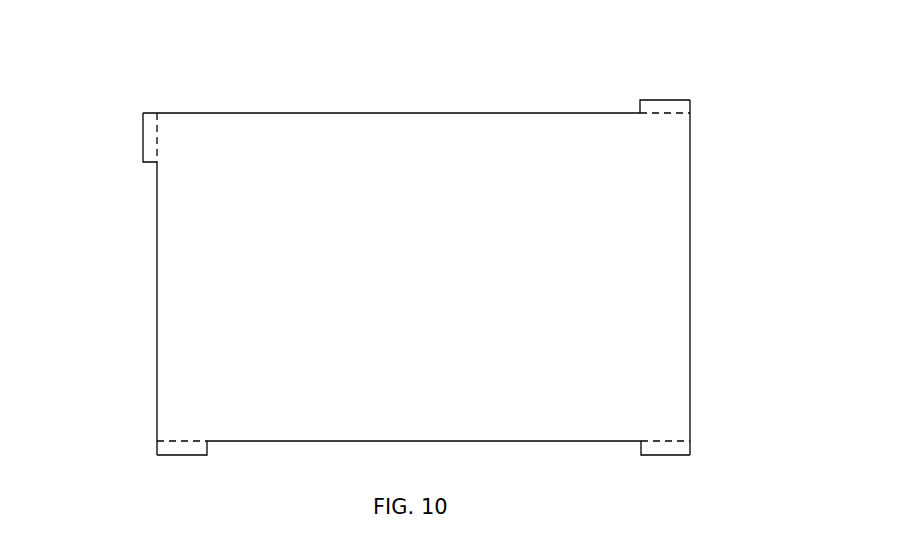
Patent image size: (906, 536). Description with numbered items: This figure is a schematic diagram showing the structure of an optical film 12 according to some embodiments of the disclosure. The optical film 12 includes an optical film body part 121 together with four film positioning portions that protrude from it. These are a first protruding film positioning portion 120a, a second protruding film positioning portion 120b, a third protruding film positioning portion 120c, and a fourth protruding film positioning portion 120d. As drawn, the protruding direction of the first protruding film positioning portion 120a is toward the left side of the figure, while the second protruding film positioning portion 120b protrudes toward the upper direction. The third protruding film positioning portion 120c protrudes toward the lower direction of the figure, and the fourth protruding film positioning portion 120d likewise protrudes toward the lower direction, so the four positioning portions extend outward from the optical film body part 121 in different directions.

The optical film 12 is at (157, 243).
The optical film body part 121 is at (376, 143).
The first protruding film positioning portion 120a is at (148, 133).
The second protruding film positioning portion 120b is at (688, 104).
The third protruding film positioning portion 120c is at (690, 450).
The fourth protruding film positioning portion 120d is at (170, 450).